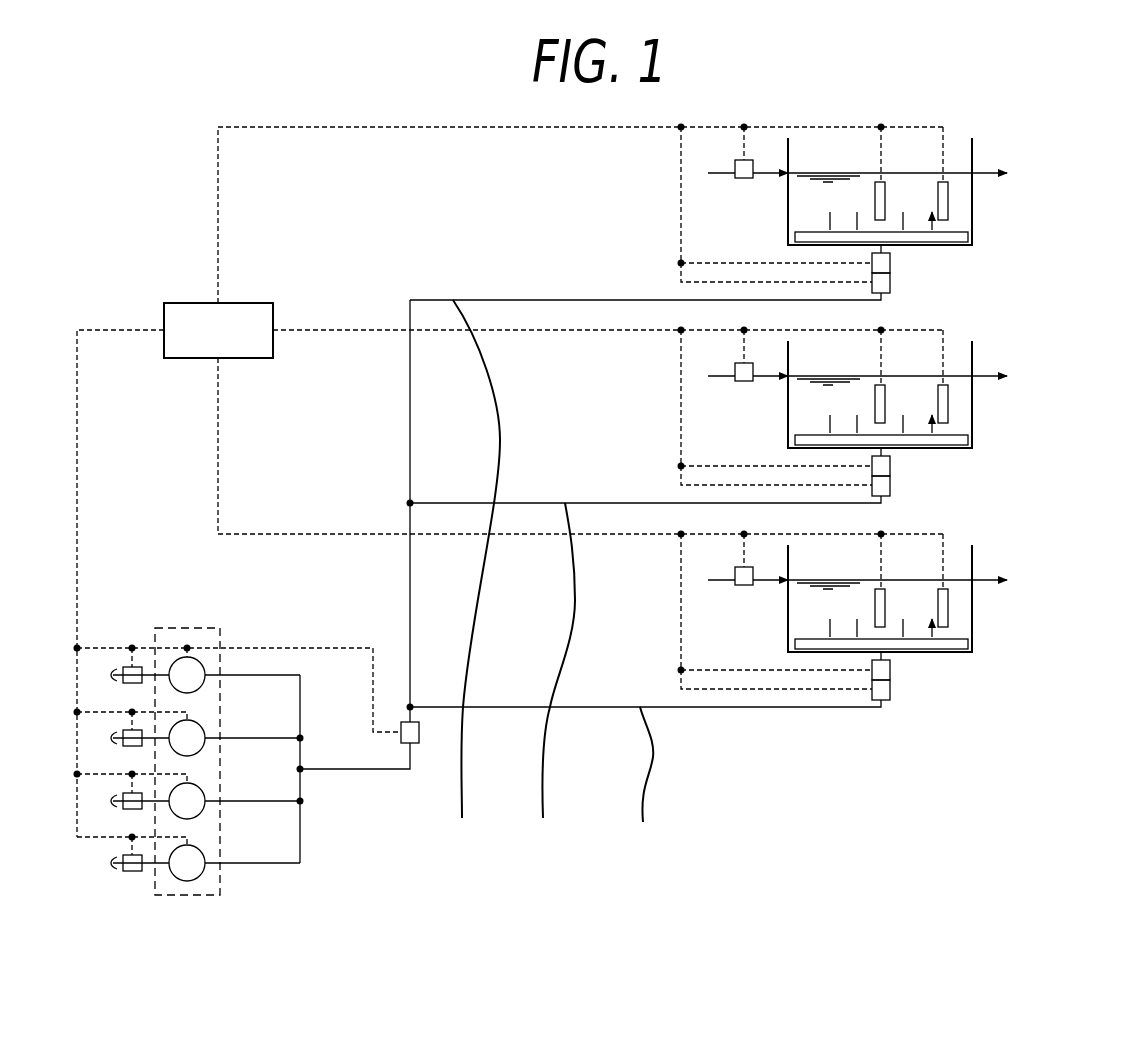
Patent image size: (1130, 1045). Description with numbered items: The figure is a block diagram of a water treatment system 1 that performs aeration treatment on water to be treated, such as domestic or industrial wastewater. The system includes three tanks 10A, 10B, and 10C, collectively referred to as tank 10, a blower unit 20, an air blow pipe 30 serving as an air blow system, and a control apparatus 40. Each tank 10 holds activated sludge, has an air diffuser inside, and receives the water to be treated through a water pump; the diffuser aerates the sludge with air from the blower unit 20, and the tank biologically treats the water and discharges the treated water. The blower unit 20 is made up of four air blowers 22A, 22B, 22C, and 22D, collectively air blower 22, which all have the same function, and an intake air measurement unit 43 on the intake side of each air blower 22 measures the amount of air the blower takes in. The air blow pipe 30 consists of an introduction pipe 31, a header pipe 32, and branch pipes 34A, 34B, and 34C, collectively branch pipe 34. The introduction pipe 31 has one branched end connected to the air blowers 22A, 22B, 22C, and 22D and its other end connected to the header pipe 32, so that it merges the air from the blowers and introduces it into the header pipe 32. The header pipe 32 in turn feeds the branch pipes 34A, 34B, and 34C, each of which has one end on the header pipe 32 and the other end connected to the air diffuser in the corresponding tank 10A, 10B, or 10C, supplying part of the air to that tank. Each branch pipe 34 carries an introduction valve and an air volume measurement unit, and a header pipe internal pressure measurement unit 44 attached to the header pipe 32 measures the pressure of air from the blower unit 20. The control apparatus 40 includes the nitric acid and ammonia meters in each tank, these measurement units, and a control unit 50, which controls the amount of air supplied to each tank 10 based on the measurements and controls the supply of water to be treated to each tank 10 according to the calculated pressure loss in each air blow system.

The water treatment system 1 is at (1052, 133).
The tank 10 is at (1033, 187).
The tank 10A is at (973, 199).
The tank 10B is at (973, 402).
The tank 10C is at (973, 606).
The blower unit 20 is at (175, 628).
The air blower 22 is at (263, 683).
The air blower 22A is at (203, 686).
The air blower 22B is at (203, 749).
The air blower 22C is at (203, 812).
The air blower 22D is at (203, 874).
The air blow pipe 30 is at (352, 896).
The introduction pipe 31 is at (301, 826).
The header pipe 32 is at (376, 769).
The branch pipe 34 is at (437, 841).
The branch pipe 34A is at (468, 575).
The branch pipe 34B is at (551, 676).
The branch pipe 34C is at (641, 778).
The control apparatus 40 is at (254, 248).
The intake air measurement unit 43 is at (130, 684).
The header pipe internal pressure measurement unit 44 is at (399, 738).
The control unit 50 is at (246, 303).